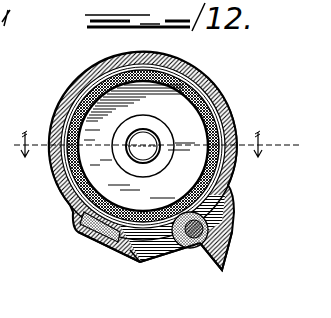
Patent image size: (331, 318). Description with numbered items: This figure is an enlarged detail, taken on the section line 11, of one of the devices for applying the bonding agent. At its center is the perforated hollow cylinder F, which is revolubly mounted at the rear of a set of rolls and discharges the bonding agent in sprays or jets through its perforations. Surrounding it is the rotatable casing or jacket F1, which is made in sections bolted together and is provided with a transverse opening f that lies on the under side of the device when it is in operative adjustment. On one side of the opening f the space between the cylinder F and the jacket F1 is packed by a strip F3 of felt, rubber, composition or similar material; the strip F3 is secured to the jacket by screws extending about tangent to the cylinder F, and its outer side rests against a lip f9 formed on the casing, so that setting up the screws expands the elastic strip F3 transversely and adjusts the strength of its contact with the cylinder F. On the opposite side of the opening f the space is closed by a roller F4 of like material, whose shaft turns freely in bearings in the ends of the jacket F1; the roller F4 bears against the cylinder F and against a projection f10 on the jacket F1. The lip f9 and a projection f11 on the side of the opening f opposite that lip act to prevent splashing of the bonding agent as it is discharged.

The perforated hollow cylinder F is at (163, 160).
The rotatable casing or jacket F1 is at (233, 125).
The packing strip F3 is at (93, 242).
The packing roller F4 is at (207, 237).
The transverse opening f is at (126, 258).
The lip f9 is at (133, 262).
The projection f10 is at (207, 213).
The projection f11 is at (219, 268).
The section line 11- 11 is at (289, 138).